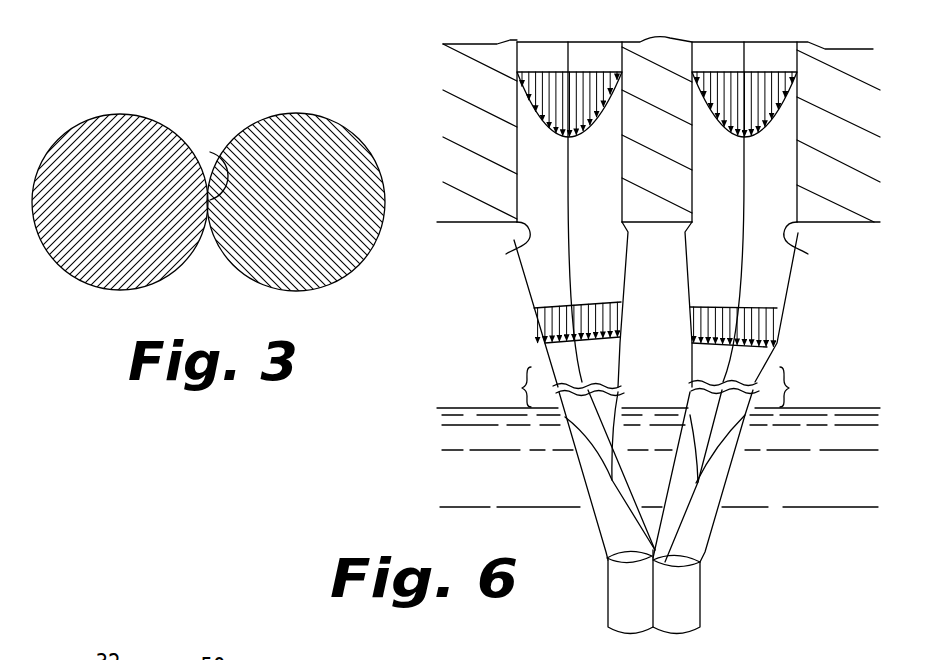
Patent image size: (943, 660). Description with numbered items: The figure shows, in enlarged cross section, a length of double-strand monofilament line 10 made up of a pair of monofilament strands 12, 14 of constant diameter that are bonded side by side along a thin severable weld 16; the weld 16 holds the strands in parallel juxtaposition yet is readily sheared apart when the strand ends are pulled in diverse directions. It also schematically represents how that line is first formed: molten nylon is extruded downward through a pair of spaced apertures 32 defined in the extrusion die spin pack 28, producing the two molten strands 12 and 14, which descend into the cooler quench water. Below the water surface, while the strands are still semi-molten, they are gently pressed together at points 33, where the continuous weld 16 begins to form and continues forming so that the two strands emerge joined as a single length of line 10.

In FIG. 3, the double-strand monofilament line 10 is at (208, 148).
In FIG. 6, the double-strand monofilament line 10 is at (653, 605).
In FIG. 3, the monofilament strand 12 is at (146, 123).
In FIG. 6, the monofilament strand 12 is at (615, 515).
In FIG. 3, the monofilament strand 14 is at (282, 140).
In FIG. 6, the monofilament strand 14 is at (695, 525).
In FIG. 3, the weld 16 is at (222, 150).
In FIG. 6, the weld 16 is at (652, 592).
In FIG. 6, the extrusion die spin pack 28 is at (496, 57).
In FIG. 6, the apertures 32 is at (506, 254).
In FIG. 6, the points of initial pressing together 33 is at (648, 553).